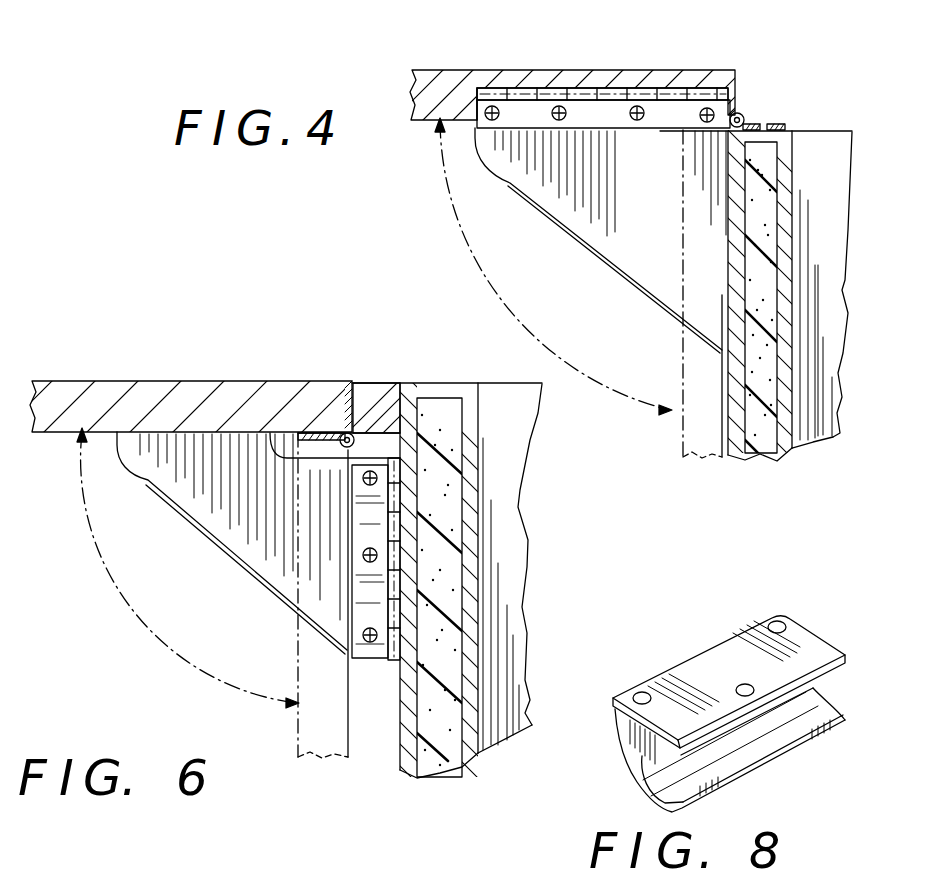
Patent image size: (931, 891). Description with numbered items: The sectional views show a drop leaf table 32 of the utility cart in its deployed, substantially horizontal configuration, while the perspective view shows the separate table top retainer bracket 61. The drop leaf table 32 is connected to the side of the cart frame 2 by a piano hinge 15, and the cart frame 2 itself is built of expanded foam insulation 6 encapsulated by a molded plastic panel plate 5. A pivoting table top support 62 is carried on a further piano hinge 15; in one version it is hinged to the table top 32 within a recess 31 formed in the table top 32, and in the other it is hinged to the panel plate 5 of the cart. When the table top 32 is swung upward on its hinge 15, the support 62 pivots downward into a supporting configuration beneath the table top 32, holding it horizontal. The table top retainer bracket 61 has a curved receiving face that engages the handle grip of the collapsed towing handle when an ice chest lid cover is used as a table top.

In FIG. 4, the cart frame 2 is at (853, 220).
In FIG. 6, the cart frame 2 is at (510, 568).
In FIG. 4, the panel plate 5 is at (728, 424).
In FIG. 6, the panel plate 5 is at (468, 752).
In FIG. 4, the expanded foam insulation 6 is at (765, 167).
In FIG. 6, the expanded foam insulation 6 is at (440, 432).
In FIG. 4, the piano hinge 15 is at (682, 95).
In FIG. 6, the piano hinge 15 is at (343, 434).
In FIG. 4, the recess 31 is at (467, 100).
In FIG. 4, the drop leaf table 32 is at (500, 62).
In FIG. 6, the drop leaf table 32 is at (82, 372).
In FIG. 8, the table top retainer bracket 61 is at (702, 640).
In FIG. 4, the pivoting table top support 62 is at (662, 212).
In FIG. 6, the pivoting table top support 62 is at (192, 497).